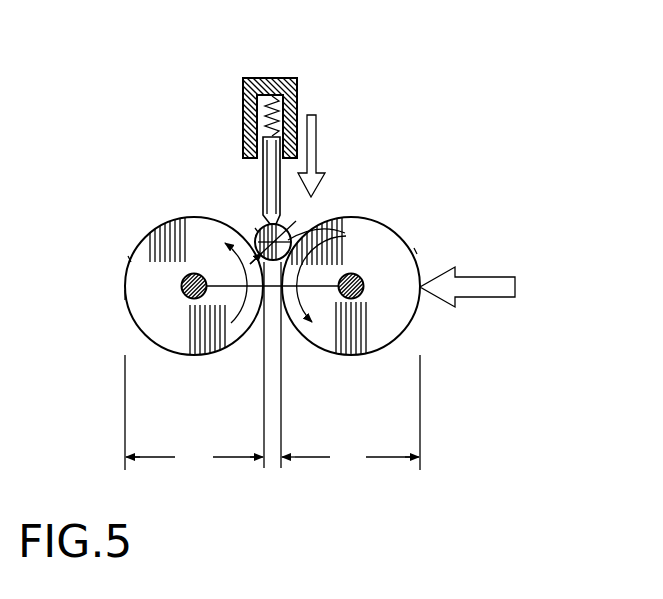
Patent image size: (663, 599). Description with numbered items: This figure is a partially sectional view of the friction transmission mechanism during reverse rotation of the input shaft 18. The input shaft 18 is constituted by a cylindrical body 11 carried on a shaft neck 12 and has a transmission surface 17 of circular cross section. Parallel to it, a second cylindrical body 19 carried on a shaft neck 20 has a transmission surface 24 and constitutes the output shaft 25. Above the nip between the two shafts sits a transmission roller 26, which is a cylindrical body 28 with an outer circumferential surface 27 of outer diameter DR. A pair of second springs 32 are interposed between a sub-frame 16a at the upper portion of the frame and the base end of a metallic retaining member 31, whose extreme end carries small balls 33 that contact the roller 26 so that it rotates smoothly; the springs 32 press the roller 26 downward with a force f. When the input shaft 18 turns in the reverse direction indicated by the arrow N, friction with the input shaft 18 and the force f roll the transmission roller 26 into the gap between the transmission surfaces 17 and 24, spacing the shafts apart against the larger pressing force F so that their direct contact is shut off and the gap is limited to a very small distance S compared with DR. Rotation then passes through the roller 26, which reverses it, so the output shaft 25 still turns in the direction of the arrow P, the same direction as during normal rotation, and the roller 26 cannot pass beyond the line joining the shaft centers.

The cylindrical body 11 is at (358, 353).
The shaft neck 12 is at (358, 298).
The sub-frame 16a is at (255, 78).
The transmission surface 17 is at (416, 251).
The input shaft 18 is at (432, 260).
The cylindrical body 19 is at (170, 349).
The shaft neck 20 is at (211, 353).
The transmission surface 24 is at (130, 258).
The output shaft 25 is at (123, 298).
The transmission roller 26 is at (178, 178).
The outer circumferential surface 27 is at (256, 226).
The cylindrical body 28 is at (296, 221).
The metallic retaining member 31 is at (257, 143).
The second springs 32 is at (266, 108).
The balls 33 is at (270, 219).